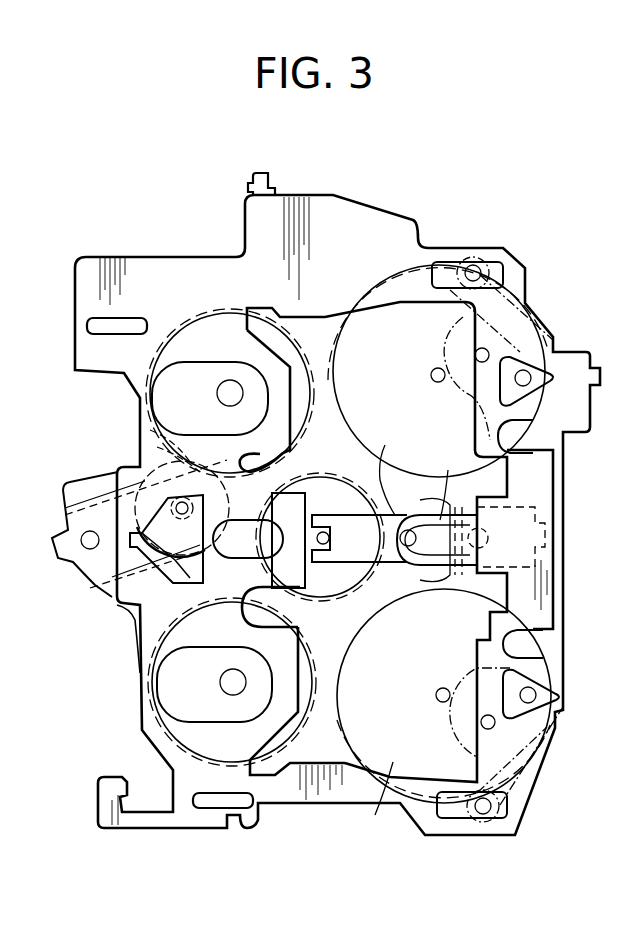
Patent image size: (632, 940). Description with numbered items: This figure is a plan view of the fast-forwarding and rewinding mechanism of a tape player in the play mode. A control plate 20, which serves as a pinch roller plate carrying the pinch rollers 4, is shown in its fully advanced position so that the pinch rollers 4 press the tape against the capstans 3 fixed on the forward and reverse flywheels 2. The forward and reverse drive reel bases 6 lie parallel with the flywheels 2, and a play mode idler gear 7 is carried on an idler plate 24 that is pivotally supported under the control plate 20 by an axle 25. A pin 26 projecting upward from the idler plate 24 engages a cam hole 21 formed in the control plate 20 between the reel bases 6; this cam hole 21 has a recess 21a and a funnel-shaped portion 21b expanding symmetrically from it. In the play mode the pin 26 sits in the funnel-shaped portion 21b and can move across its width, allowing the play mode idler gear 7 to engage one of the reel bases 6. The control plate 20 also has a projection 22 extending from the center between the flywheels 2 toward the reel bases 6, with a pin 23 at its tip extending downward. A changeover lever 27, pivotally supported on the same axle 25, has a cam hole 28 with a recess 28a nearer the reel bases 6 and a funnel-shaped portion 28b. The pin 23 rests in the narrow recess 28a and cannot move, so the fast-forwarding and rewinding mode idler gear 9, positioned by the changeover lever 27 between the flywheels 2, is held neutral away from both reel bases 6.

The flywheel 2 is at (372, 330).
The capstan 3 is at (434, 381).
The pinch roller 4 is at (455, 345).
The reel base 6 is at (230, 330).
The play mode idler gear 7 is at (140, 442).
The fast-forwarding and rewinding mode idler gear 9 is at (308, 505).
The control plate 20 is at (380, 215).
The cam hole 21 is at (240, 588).
The recess 21a is at (93, 573).
The funnel-shaped portion 21b is at (167, 573).
The projection 22 is at (462, 570).
The pin 23 is at (435, 565).
The idler plate 24 is at (70, 500).
The axle 25 is at (82, 535).
The pin 26 is at (208, 480).
The changeover lever 27 is at (405, 500).
The cam hole 28 is at (470, 488).
The recess 28a is at (385, 600).
The funnel-shaped portion 28b is at (438, 500).